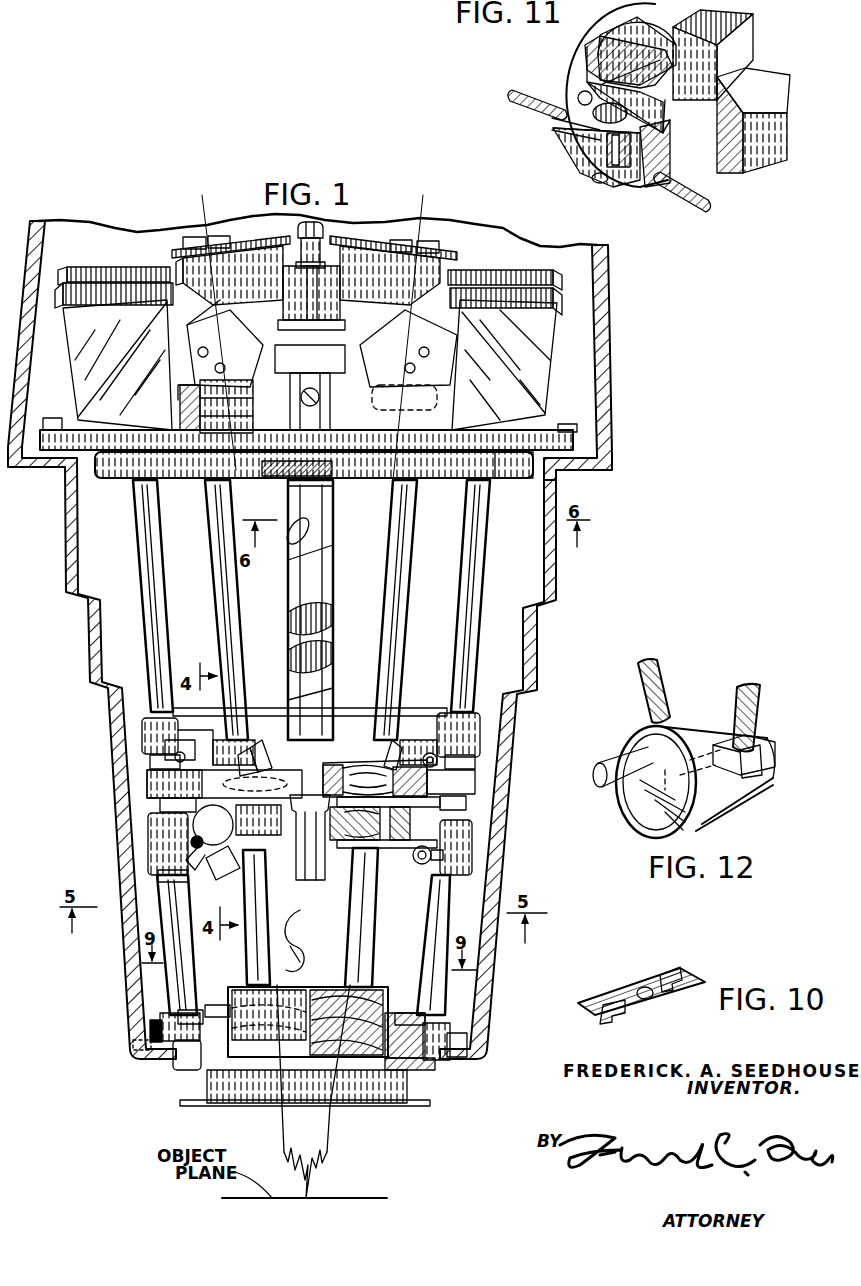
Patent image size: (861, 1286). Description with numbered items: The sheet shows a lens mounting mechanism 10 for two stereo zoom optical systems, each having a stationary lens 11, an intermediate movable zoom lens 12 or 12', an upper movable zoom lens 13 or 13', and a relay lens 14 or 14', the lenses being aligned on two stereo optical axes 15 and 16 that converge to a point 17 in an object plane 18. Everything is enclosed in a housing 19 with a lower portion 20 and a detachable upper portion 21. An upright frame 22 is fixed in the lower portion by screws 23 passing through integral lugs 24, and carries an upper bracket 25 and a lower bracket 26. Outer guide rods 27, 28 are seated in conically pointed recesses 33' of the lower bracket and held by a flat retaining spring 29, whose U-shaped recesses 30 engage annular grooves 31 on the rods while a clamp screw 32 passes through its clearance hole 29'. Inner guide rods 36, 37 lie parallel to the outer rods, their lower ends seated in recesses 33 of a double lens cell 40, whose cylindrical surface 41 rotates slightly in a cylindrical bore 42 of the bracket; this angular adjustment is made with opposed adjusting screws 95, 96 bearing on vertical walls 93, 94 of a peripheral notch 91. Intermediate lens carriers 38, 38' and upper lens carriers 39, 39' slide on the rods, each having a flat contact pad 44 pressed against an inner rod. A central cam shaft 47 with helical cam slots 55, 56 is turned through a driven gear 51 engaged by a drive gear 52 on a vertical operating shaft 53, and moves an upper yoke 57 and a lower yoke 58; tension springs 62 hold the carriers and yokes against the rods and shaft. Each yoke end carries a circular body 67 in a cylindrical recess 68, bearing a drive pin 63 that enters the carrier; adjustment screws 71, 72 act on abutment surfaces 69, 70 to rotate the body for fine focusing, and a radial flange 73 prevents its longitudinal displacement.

In FIG. 1, the lens mounting mechanism 10 is at (592, 592).
In FIG. 1, the stationary lens 11 is at (358, 1003).
In FIG. 1, the intermediate movable zoom system lens 12 is at (383, 897).
In FIG. 1, the intermediate movable zoom system lens 12' is at (310, 837).
In FIG. 1, the upper movable zoom system lens 13 is at (381, 742).
In FIG. 1, the upper movable zoom system lens 13' is at (266, 763).
In FIG. 1, the relay lens 14 is at (461, 350).
In FIG. 1, the relay lens 14' is at (216, 422).
In FIG. 1, the stereo optical axis 15 is at (278, 1130).
In FIG. 1, the stereo optical axis 16 is at (331, 1128).
In FIG. 1, the convergence point 17 is at (307, 1200).
In FIG. 1, the object plane 18 is at (327, 1198).
In FIG. 1, the housing 19 is at (540, 635).
In FIG. 1, the lower portion 20 is at (107, 710).
In FIG. 1, the upper portion 21 is at (608, 392).
In FIG. 1, the upright frame 22 is at (128, 483).
In FIG. 1, the screws 23 is at (576, 422).
In FIG. 1, the projecting integral lugs 24 is at (72, 430).
In FIG. 1, the upper bracket 25 is at (500, 478).
In FIG. 1, the lower bracket 26 is at (440, 1030).
In FIG. 1, the outer guide rod 27 is at (480, 630).
In FIG. 1, the outer guide rod 28 is at (148, 615).
In FIG. 1, the flat retaining spring 29 is at (282, 1005).
In FIG. 10, the flat retaining spring 29 is at (641, 1001).
In FIG. 10, the clearance hole 29' is at (632, 977).
In FIG. 1, the U-shaped recess 30 is at (200, 1063).
In FIG. 10, the U-shaped recess 30 is at (684, 980).
In FIG. 1, the annular groove 31 is at (197, 1010).
In FIG. 1, the clamp screw 32 is at (217, 1005).
In FIG. 11, the recess 33 is at (633, 115).
In FIG. 1, the conically pointed recess 33' is at (120, 1056).
In FIG. 1, the inner guide rod 36 is at (220, 577).
In FIG. 1, the inner guide rod 37 is at (405, 555).
In FIG. 1, the movable intermediate lens carrier 38 is at (136, 914).
In FIG. 1, the movable intermediate lens carrier 38' is at (484, 917).
In FIG. 1, the movable zoom lens carrier 39 is at (187, 787).
In FIG. 1, the movable zoom lens carrier 39' is at (491, 786).
In FIG. 1, the double lens cell 40 is at (443, 1070).
In FIG. 11, the double lens cell 40 is at (780, 170).
In FIG. 1, the cylindrical surface 41 is at (440, 1077).
In FIG. 11, the cylindrical surface 41 is at (552, 62).
In FIG. 1, the cylindrical bore 42 is at (412, 1072).
In FIG. 1, the flat contact pad 44 is at (253, 763).
In FIG. 1, the central cam shaft 47 is at (290, 507).
In FIG. 1, the driven gear 51 is at (370, 482).
In FIG. 1, the drive gear 52 is at (268, 478).
In FIG. 1, the vertical operating shaft 53 is at (324, 238).
In FIG. 1, the helical cam slot 55 is at (292, 540).
In FIG. 1, the helical cam slot 56 is at (290, 928).
In FIG. 1, the upper yoke 57 is at (258, 706).
In FIG. 1, the lower yoke 58 is at (267, 872).
In FIG. 1, the tension springs 62 is at (150, 762).
In FIG. 12, the drive pin 63 is at (605, 768).
In FIG. 1, the circular body 67 is at (233, 837).
In FIG. 12, the circular body 67 is at (635, 800).
In FIG. 1, the cylindrical recess 68 is at (217, 879).
In FIG. 12, the abutment surface 69 is at (700, 780).
In FIG. 12, the abutment surface 70 is at (760, 780).
In FIG. 12, the adjustment screw 71 is at (668, 692).
In FIG. 12, the adjustment screw 72 is at (738, 750).
In FIG. 12, the radial flange 73 is at (762, 748).
In FIG. 11, the notch 91 is at (555, 105).
In FIG. 11, the vertical wall 93 is at (560, 148).
In FIG. 11, the vertical wall 94 is at (597, 182).
In FIG. 11, the adjusting screw 95 is at (512, 110).
In FIG. 11, the adjusting screw 96 is at (675, 205).